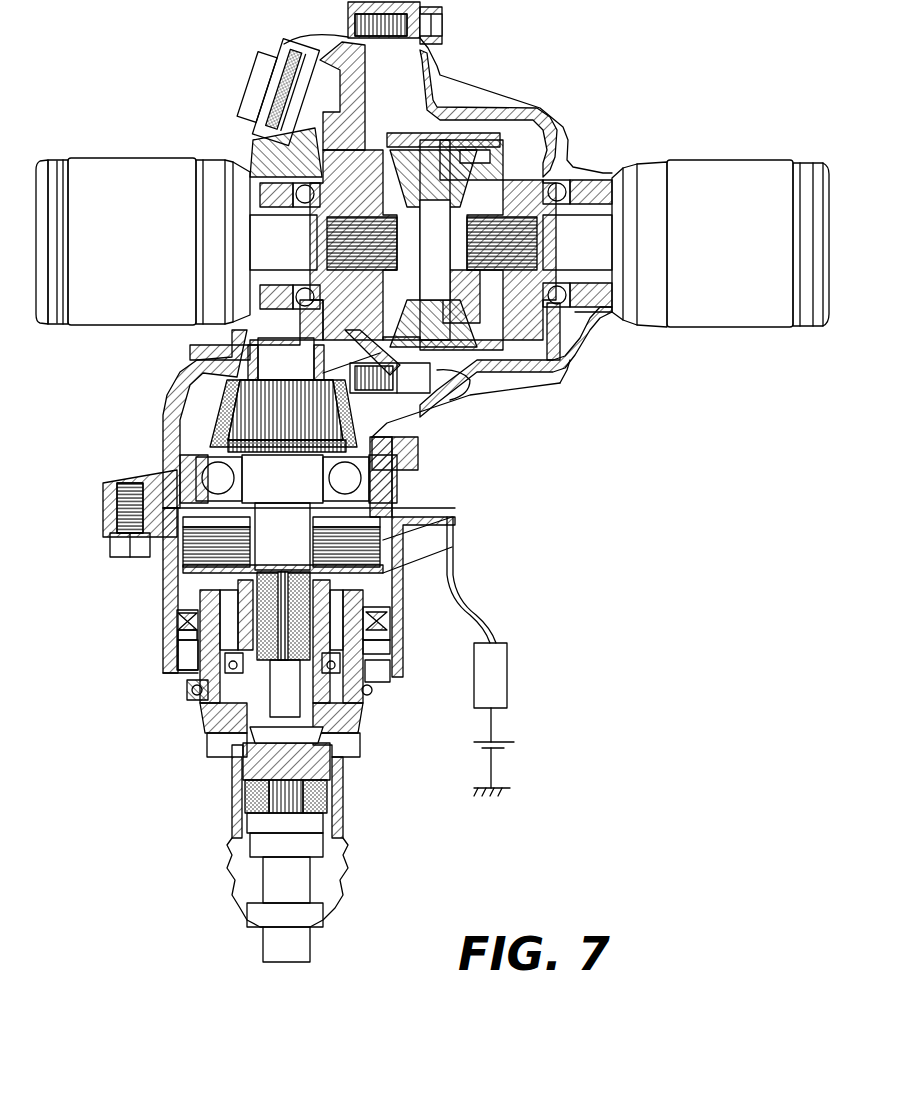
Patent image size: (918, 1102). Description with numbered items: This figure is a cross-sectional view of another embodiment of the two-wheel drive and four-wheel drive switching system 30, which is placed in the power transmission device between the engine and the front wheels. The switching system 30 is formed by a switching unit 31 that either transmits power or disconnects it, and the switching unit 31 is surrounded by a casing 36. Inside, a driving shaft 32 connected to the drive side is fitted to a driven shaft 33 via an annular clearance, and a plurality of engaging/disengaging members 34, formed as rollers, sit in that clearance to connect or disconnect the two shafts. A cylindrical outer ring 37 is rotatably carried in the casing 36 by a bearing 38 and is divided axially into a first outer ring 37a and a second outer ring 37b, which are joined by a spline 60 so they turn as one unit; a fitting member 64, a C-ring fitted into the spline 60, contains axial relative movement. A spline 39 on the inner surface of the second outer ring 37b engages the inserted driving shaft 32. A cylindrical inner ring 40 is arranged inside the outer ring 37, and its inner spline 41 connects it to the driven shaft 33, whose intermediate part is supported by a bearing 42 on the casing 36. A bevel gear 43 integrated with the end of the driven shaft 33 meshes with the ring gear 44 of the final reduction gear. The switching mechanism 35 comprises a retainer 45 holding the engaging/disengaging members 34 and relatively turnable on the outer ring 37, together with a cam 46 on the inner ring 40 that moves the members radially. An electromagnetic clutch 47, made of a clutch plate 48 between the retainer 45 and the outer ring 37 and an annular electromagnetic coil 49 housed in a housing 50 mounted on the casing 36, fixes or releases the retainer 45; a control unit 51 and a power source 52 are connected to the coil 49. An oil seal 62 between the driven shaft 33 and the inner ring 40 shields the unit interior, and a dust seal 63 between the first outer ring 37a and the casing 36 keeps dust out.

The two-wheel drive and four-wheel drive switching system 30 is at (436, 500).
The switching unit 31 is at (380, 690).
The driving shaft 32 is at (280, 886).
The driven shaft 33 is at (250, 480).
The engaging/disengaging members 34 is at (392, 618).
The switching mechanism 35 is at (180, 620).
The casing 36 is at (175, 575).
The outer ring 37 is at (400, 763).
The first outer ring 37a is at (343, 757).
The second outer ring 37b is at (345, 813).
The bearing 38 is at (175, 640).
The spline 39 is at (235, 797).
The inner ring 40 is at (205, 682).
The spline 41 is at (283, 572).
The bearing 42 is at (395, 468).
The bevel gear 43 is at (215, 400).
The ring gear 44 is at (415, 412).
The retainer 45 is at (370, 600).
The cam 46 is at (395, 645).
The electromagnetic clutch 47 is at (545, 505).
The clutch plate 48 is at (455, 548).
The electromagnetic coil 49 is at (455, 516).
The housing 50 is at (160, 600).
The control unit 51 is at (505, 678).
The power source 52 is at (515, 745).
The spline 60 is at (210, 745).
The oil seal 62 is at (210, 700).
The dust seal 63 is at (405, 683).
The fitting member 64 is at (125, 490).